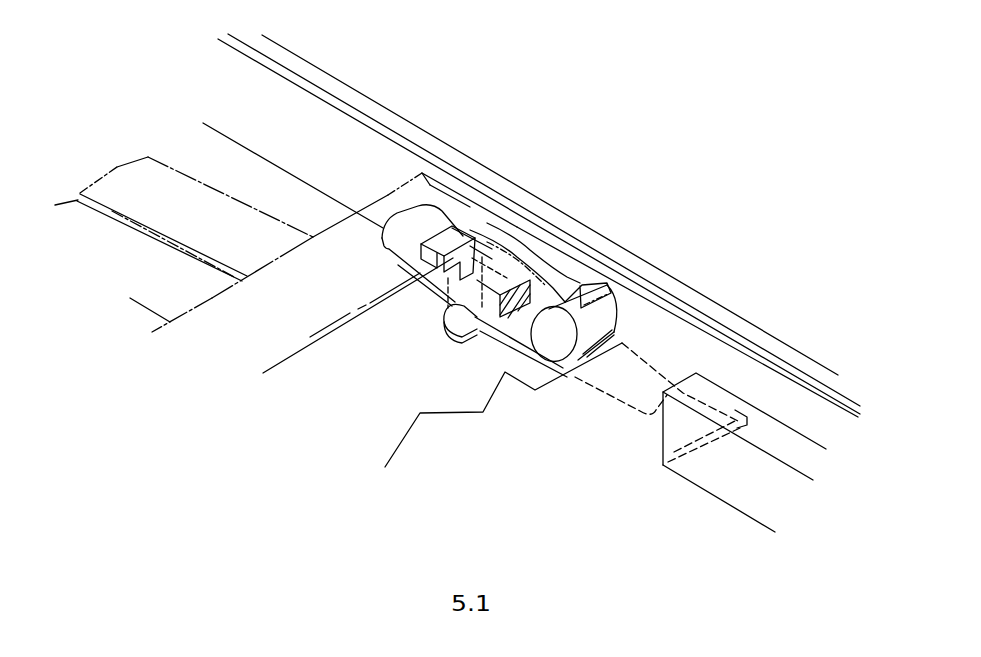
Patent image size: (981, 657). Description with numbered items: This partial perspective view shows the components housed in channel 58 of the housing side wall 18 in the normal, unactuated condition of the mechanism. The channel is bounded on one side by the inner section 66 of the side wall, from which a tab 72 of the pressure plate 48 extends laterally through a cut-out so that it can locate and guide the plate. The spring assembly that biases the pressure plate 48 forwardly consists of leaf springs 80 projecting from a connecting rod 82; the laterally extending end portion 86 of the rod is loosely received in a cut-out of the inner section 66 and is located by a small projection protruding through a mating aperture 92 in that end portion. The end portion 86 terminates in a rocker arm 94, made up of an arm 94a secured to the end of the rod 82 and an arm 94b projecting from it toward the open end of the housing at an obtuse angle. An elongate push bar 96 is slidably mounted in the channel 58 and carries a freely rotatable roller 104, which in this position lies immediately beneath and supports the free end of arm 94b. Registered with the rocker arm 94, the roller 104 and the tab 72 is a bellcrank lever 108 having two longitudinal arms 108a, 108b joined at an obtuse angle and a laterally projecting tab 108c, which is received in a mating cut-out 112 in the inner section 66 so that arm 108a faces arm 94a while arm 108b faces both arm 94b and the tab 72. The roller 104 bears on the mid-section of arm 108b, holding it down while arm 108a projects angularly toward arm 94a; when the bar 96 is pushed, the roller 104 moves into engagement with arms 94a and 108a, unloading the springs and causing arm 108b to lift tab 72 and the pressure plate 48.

The housing side wall 18 is at (357, 93).
The pressure plate 48 is at (452, 477).
The channel 58 is at (742, 365).
The inner section 66 is at (770, 427).
The tab 72 is at (660, 365).
The leaf spring 80 is at (73, 208).
The connecting rod 82 is at (277, 323).
The end portion 86 is at (385, 211).
The aperture 92 is at (422, 173).
The rocker arm 94 is at (545, 242).
The arm 94a is at (457, 210).
The arm 94b is at (575, 268).
The push bar 96 is at (264, 116).
The roller 104 is at (607, 300).
The bellcrank lever 108 is at (493, 317).
The arm 108a is at (400, 263).
The arm 108b is at (600, 418).
The tab 108c is at (437, 340).
The cut-out 112 is at (432, 281).